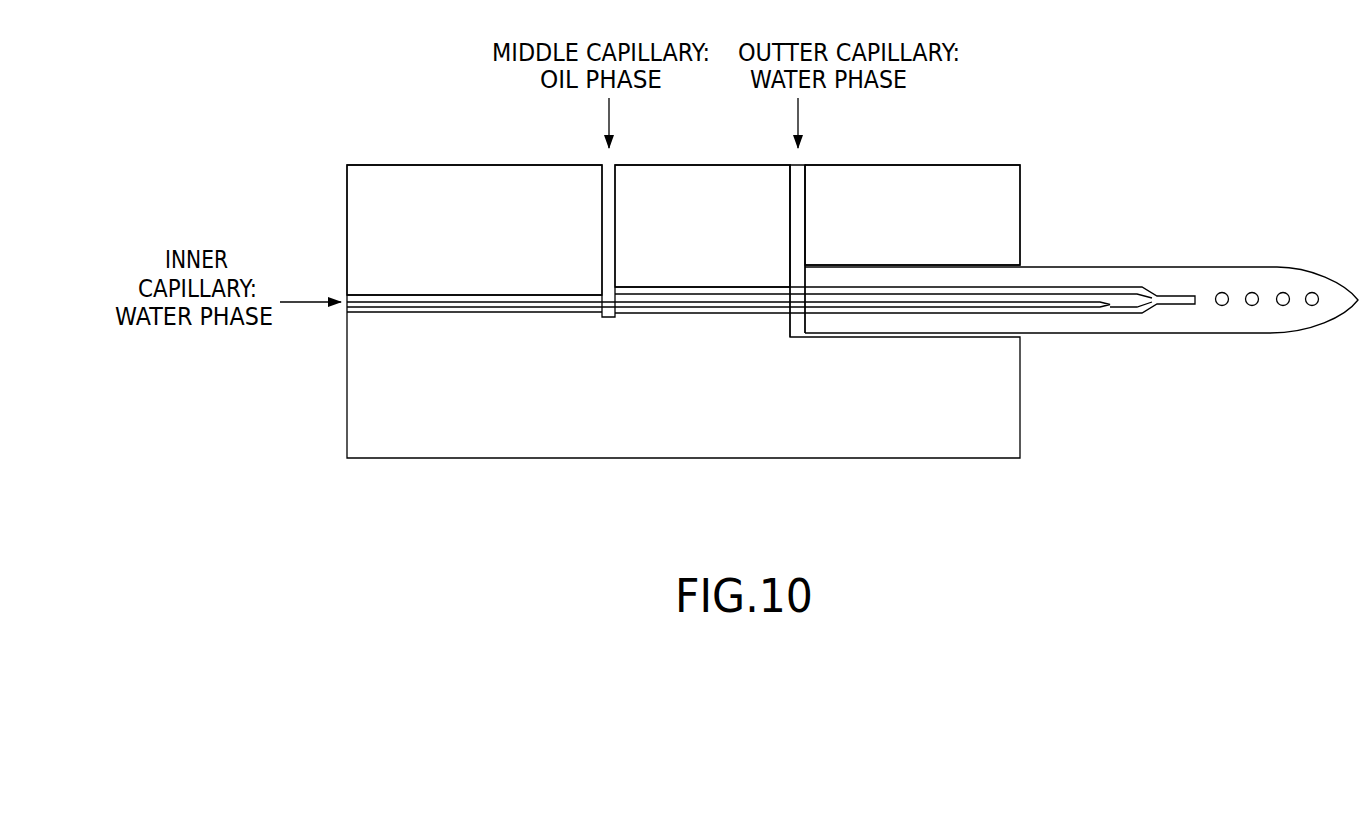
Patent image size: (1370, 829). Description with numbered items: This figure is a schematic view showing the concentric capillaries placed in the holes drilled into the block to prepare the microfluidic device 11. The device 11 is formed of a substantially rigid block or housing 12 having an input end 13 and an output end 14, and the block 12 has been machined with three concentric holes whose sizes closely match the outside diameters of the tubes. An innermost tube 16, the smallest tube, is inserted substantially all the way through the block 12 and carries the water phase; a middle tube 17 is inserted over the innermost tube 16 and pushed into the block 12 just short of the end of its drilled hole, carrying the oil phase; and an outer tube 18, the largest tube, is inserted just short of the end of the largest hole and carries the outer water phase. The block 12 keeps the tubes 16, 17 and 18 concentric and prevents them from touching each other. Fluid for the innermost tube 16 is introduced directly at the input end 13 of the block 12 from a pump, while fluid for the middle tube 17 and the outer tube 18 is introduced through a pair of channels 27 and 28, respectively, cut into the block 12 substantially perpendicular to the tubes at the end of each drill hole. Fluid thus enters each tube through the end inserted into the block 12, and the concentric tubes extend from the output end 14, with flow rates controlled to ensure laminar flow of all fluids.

The unitary flow direction microfluidic device 11 is at (958, 127).
The block 12 is at (672, 385).
The input end 13 is at (332, 263).
The output end 14 is at (1042, 238).
The innermost tube 16 is at (430, 303).
The middle tube 17 is at (733, 312).
The outer tube 18 is at (960, 332).
The channel 27 is at (612, 188).
The channel 28 is at (802, 188).